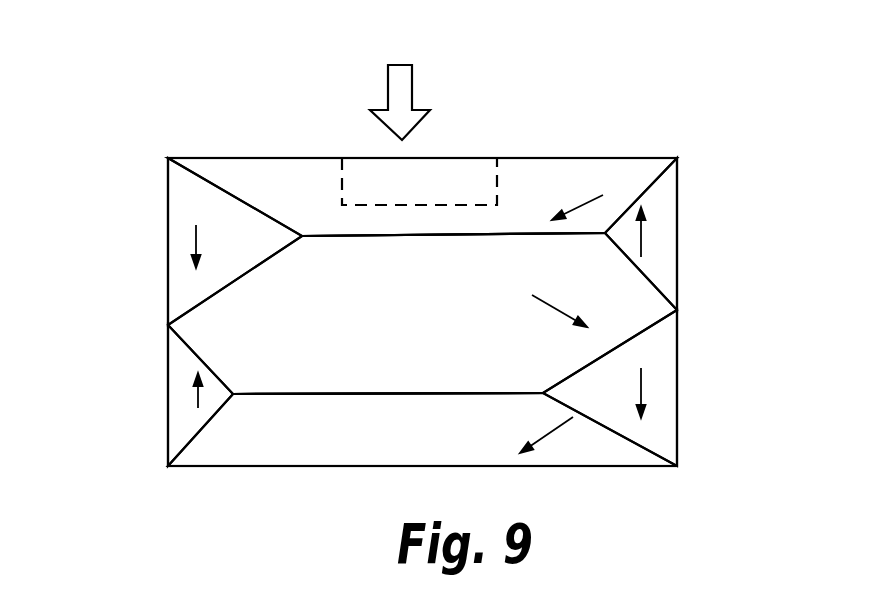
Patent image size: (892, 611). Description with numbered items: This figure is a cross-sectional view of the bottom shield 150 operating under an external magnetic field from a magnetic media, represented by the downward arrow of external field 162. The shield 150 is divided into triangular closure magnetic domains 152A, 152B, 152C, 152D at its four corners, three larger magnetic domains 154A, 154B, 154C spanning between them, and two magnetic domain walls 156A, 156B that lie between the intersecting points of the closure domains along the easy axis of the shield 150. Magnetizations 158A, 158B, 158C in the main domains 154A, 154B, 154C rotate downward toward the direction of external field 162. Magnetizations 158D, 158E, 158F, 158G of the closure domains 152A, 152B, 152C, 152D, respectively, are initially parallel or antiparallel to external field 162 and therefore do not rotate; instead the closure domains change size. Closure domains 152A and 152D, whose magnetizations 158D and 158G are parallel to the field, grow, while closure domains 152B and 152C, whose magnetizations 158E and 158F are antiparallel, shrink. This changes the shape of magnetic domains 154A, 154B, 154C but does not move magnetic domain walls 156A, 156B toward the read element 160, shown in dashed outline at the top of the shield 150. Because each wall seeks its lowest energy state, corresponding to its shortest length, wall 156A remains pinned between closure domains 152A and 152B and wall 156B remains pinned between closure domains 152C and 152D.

The shield 150 is at (614, 84).
The closure magnetic domain 152A is at (182, 200).
The closure magnetic domain 152B is at (665, 252).
The closure magnetic domain 152C is at (180, 417).
The closure magnetic domain 152D is at (657, 427).
The magnetic domain 154A is at (422, 197).
The magnetic domain 154B is at (422, 313).
The magnetic domain 154C is at (422, 429).
The magnetic domain wall 156A is at (387, 235).
The magnetic domain wall 156B is at (365, 393).
The magnetization 158A is at (589, 191).
The magnetization 158B is at (570, 294).
The magnetization 158C is at (570, 439).
The magnetization 158D is at (192, 240).
The magnetization 158E is at (647, 220).
The magnetization 158F is at (190, 398).
The magnetization 158G is at (643, 380).
The read element 160 is at (370, 165).
The external field 162 is at (423, 102).